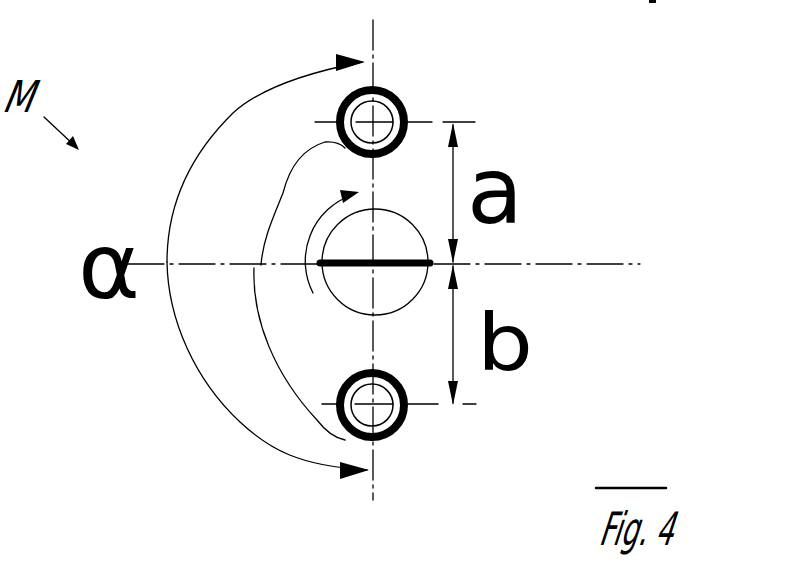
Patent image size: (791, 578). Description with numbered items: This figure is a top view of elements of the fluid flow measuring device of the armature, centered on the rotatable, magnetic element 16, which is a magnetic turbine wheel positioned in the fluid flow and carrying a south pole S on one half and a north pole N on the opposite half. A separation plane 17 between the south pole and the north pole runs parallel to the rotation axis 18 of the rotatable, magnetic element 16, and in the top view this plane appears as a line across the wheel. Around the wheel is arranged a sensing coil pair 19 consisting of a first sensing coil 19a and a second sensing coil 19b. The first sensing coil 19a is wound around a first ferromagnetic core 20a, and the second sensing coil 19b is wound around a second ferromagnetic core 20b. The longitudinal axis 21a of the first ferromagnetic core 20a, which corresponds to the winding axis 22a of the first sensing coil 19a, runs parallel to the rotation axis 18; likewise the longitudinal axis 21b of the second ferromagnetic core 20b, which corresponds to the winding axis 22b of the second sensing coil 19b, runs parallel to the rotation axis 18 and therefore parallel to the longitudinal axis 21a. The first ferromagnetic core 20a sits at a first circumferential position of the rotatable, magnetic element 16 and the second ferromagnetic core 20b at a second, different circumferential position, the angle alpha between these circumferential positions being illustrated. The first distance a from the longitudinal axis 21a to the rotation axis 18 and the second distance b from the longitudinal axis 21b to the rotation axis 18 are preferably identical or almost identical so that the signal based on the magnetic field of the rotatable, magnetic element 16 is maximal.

The rotatable, magnetic element 16 is at (258, 343).
The separation plane 17 is at (435, 263).
The rotation axis 18 is at (318, 275).
The sensing coil pair 19 is at (516, 276).
The first sensing coil 19a is at (505, 80).
The second sensing coil 19b is at (516, 459).
The first ferromagnetic core 20a is at (373, 122).
The second ferromagnetic core 20b is at (373, 405).
The longitudinal axis of the first ferromagnetic core 21a is at (505, 80).
The winding axis of the first sensing coil 22a is at (398, 92).
The longitudinal axis of the second ferromagnetic core 21b is at (516, 459).
The winding axis of the second sensing coil 22b is at (373, 405).